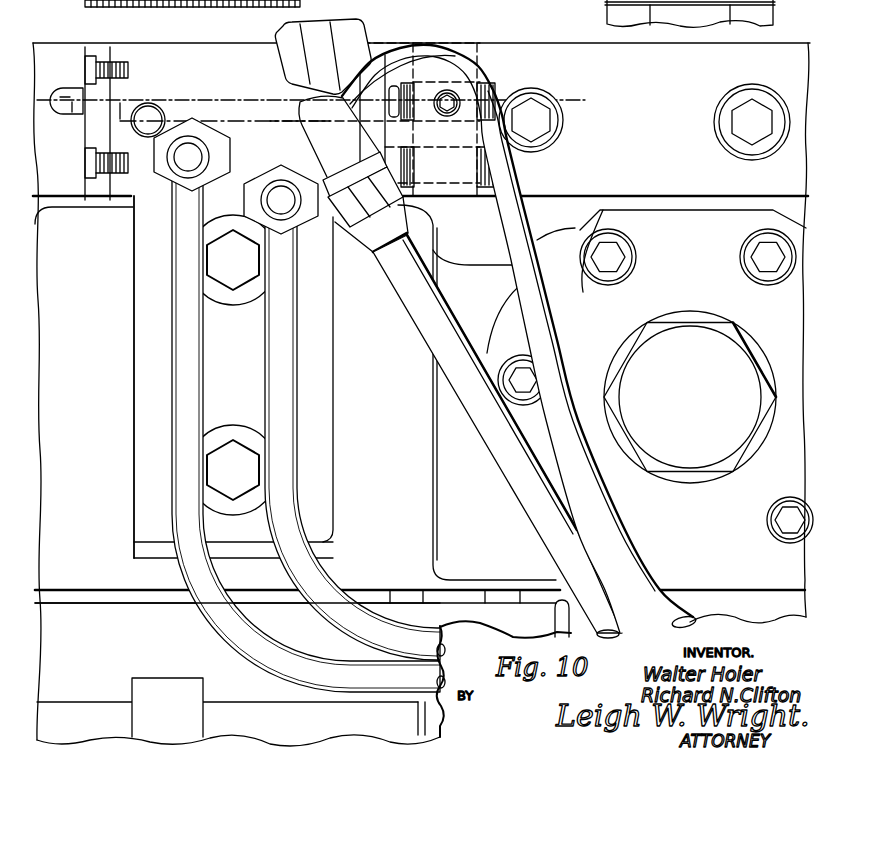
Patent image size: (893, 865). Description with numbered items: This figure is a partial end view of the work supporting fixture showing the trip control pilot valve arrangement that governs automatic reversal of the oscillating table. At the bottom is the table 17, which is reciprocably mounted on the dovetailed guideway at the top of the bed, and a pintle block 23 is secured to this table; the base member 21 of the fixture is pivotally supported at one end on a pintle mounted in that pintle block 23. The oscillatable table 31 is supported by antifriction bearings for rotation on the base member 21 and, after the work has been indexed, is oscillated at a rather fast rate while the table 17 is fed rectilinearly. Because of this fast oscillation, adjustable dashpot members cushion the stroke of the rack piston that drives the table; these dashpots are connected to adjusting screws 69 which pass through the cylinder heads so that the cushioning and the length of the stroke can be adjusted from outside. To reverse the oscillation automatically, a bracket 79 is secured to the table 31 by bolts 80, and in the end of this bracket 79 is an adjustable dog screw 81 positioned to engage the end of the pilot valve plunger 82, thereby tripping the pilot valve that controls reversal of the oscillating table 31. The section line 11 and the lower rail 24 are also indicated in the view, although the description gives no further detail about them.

The section line 11- 11 is at (42, 97).
The table 17 is at (330, 723).
The base member 21 is at (67, 403).
The pintle block 23 is at (98, 635).
The bottom rail 24 is at (447, 598).
The oscillatable table 31 is at (517, 63).
The adjusting screws 69 is at (673, 360).
The bracket 79 is at (533, 199).
The bolts 80 is at (564, 109).
The adjustable dog screw 81 is at (407, 85).
The pilot valve plunger 82 is at (72, 108).